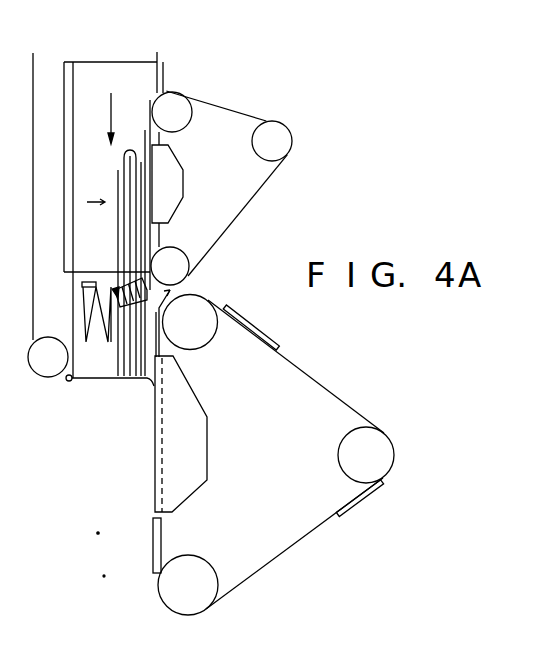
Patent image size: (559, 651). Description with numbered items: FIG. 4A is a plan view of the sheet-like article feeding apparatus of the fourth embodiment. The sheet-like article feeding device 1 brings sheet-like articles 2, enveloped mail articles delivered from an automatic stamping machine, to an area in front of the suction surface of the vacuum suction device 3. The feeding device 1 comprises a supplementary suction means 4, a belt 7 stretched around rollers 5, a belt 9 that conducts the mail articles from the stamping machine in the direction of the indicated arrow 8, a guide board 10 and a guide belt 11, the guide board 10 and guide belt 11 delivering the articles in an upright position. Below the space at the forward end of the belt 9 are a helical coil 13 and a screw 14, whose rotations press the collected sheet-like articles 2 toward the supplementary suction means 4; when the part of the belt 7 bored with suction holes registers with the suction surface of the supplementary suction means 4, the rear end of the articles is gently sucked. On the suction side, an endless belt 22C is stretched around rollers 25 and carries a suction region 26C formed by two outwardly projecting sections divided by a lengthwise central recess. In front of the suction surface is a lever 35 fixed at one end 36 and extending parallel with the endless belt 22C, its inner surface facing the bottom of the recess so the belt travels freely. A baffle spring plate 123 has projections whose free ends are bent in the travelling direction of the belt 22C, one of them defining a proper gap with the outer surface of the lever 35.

The sheet-like article feeding device 1 is at (248, 101).
The sheet-like articles 2 is at (132, 146).
The vacuum suction device 3 is at (197, 434).
The supplementary suction means 4 is at (182, 179).
The rollers 5 is at (290, 148).
The belt 7 is at (236, 216).
The arrow 8 is at (117, 118).
The belt 9 is at (130, 78).
The guide board 10 is at (158, 73).
The guide belt 11 is at (80, 74).
The helical coil 13 is at (83, 308).
The screw 14 is at (121, 290).
The rollers 25 is at (383, 452).
The suction region 26C is at (264, 318).
The lever 35 is at (168, 352).
The one end 36 is at (173, 293).
The endless belt 22C is at (318, 528).
The baffle spring plate 123 is at (90, 378).